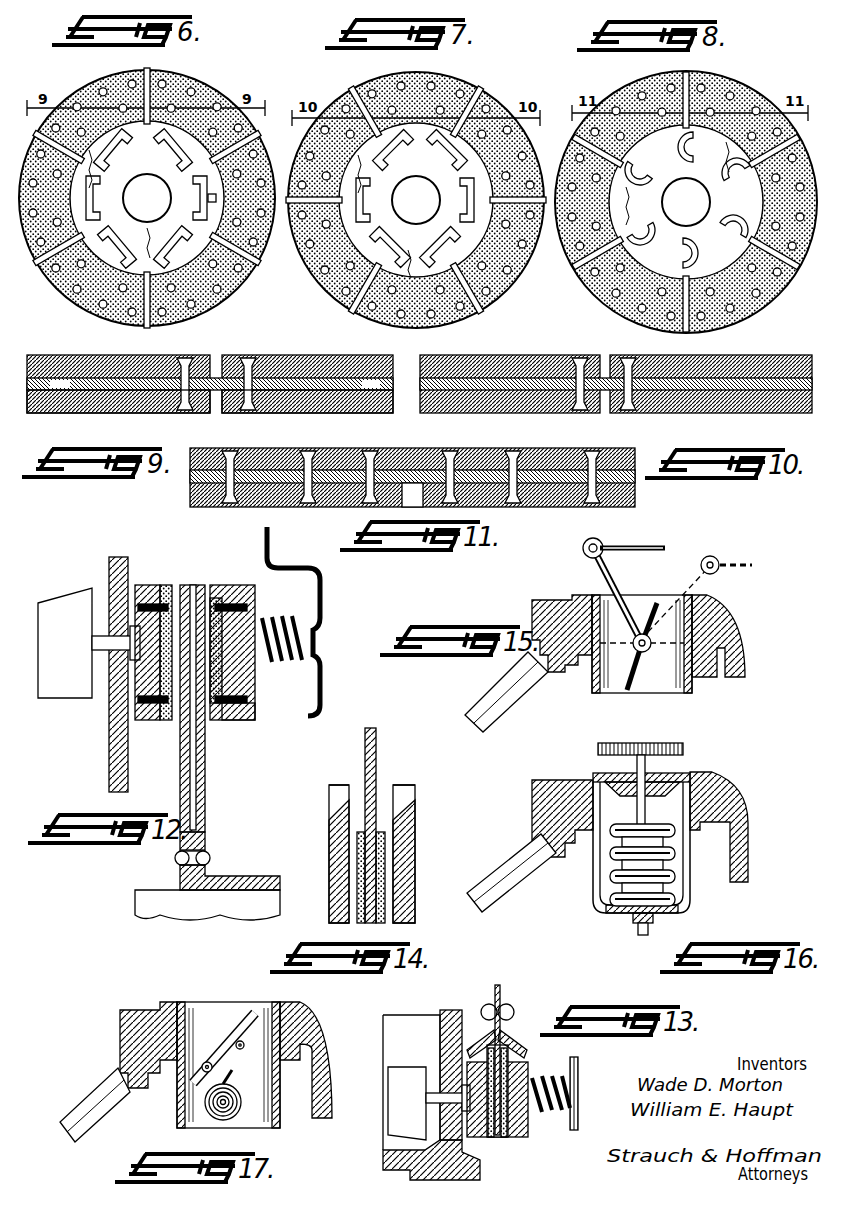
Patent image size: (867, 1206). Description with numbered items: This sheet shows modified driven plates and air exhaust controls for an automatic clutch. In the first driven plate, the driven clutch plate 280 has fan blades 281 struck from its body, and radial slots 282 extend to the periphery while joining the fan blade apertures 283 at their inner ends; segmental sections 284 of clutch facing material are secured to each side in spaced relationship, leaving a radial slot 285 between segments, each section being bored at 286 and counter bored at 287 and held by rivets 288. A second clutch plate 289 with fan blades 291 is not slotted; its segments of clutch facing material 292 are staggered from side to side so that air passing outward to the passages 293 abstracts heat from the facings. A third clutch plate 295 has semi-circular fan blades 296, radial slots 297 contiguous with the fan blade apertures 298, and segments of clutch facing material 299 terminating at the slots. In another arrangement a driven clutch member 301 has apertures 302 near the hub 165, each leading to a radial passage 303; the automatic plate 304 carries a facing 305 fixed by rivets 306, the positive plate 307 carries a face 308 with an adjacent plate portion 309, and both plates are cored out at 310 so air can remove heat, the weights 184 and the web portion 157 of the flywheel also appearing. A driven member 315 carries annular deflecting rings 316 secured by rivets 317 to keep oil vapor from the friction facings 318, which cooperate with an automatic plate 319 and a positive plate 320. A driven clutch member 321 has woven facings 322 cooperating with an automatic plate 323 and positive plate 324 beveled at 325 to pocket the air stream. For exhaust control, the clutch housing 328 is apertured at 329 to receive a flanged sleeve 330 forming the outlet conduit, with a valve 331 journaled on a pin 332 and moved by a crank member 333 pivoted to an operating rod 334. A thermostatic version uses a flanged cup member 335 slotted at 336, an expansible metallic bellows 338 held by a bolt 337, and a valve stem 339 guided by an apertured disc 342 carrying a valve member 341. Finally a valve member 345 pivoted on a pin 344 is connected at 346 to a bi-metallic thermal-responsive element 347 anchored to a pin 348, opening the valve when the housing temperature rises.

In FIG. 6, the driven clutch plate 280 is at (162, 151).
In FIG. 9, the driven clutch plate 280 is at (284, 355).
In FIG. 6, the fan blades 281 is at (190, 190).
In FIG. 6, the radial slots 282 is at (195, 250).
In FIG. 9, the radial slots 282 is at (372, 378).
In FIG. 6, the fan blade apertures 283 is at (220, 205).
In FIG. 9, the segmental sections of clutch facing material 284 is at (117, 412).
In FIG. 6, the radial slot 285 is at (246, 259).
In FIG. 9, the radial slot 285 is at (215, 365).
In FIG. 9, the bore 286 is at (306, 413).
In FIG. 9, the counter bore 287 is at (262, 412).
In FIG. 9, the rivets 288 is at (238, 412).
In FIG. 7, the clutch plate 289 is at (485, 181).
In FIG. 11, the clutch plate 289 is at (548, 473).
In FIG. 7, the fan blades 291 is at (472, 206).
In FIG. 7, the segments of clutch facing material 292 is at (493, 292).
In FIG. 11, the segments of clutch facing material 292 is at (498, 452).
In FIG. 7, the passages 293 is at (481, 322).
In FIG. 11, the passages 293 is at (410, 494).
In FIG. 8, the clutch plate 295 is at (759, 218).
In FIG. 10, the clutch plate 295 is at (605, 378).
In FIG. 8, the semi-circular fan blades 296 is at (728, 250).
In FIG. 8, the radial slots 297 is at (795, 270).
In FIG. 10, the radial slots 297 is at (606, 406).
In FIG. 8, the fan blade apertures 298 is at (695, 253).
In FIG. 10, the segments of clutch facing material 299 is at (733, 356).
In FIG. 12, the driven clutch member 301 is at (205, 767).
In FIG. 12, the apertures 302 is at (205, 836).
In FIG. 12, the radial passage 303 is at (193, 794).
In FIG. 12, the automatic plate 304 is at (137, 585).
In FIG. 12, the facing 305 is at (167, 585).
In FIG. 12, the rivets 306 is at (150, 720).
In FIG. 12, the positive plate 307 is at (237, 585).
In FIG. 12, the face 308 is at (215, 585).
In FIG. 12, the backing plate 309 is at (259, 718).
In FIG. 12, the cored out portion 310 is at (250, 682).
In FIG. 12, the centrifugal mechanism weights 184 is at (78, 651).
In FIG. 12, the web portion of flywheel 157 is at (93, 674).
In FIG. 12, the hub 165 is at (240, 878).
In FIG. 13, the driven member 315 is at (497, 1044).
In FIG. 13, the annular deflecting rings 316 is at (482, 1035).
In FIG. 13, the rivets 317 is at (508, 1006).
In FIG. 13, the friction facings 318 is at (505, 1138).
In FIG. 13, the automatic plate 319 is at (490, 1135).
In FIG. 13, the positive plate 320 is at (536, 1128).
In FIG. 14, the driven clutch member 321 is at (376, 770).
In FIG. 14, the woven facings 322 is at (370, 923).
In FIG. 14, the automatic plate 323 is at (330, 920).
In FIG. 14, the positive plate 324 is at (415, 898).
In FIG. 14, the bevel 325 is at (340, 800).
In FIG. 15, the clutch housing 328 is at (730, 620).
In FIG. 16, the clutch housing 328 is at (718, 812).
In FIG. 17, the clutch housing 328 is at (302, 1032).
In FIG. 15, the aperture 329 is at (712, 605).
In FIG. 16, the aperture 329 is at (712, 780).
In FIG. 15, the flanged sleeve 330 is at (592, 683).
In FIG. 17, the flanged sleeve 330 is at (177, 1112).
In FIG. 15, the valve 331 is at (635, 672).
In FIG. 15, the pin 332 is at (643, 634).
In FIG. 15, the crank member 333 is at (603, 578).
In FIG. 15, the operating rod 334 is at (612, 546).
In FIG. 16, the flanged cup member 335 is at (613, 910).
In FIG. 16, the slots 336 is at (596, 880).
In FIG. 16, the bolt 337 is at (653, 920).
In FIG. 16, the expansible metallic bellows 338 is at (620, 824).
In FIG. 16, the valve stem 339 is at (665, 824).
In FIG. 16, the valve member 341 is at (598, 752).
In FIG. 16, the apertured disc 342 is at (667, 784).
In FIG. 17, the pin 344 is at (208, 1062).
In FIG. 17, the valve member 345 is at (225, 1048).
In FIG. 17, the connection 346 is at (250, 1022).
In FIG. 17, the bi-metallic thermal-responsive element 347 is at (235, 1108).
In FIG. 17, the pin 348 is at (230, 1090).